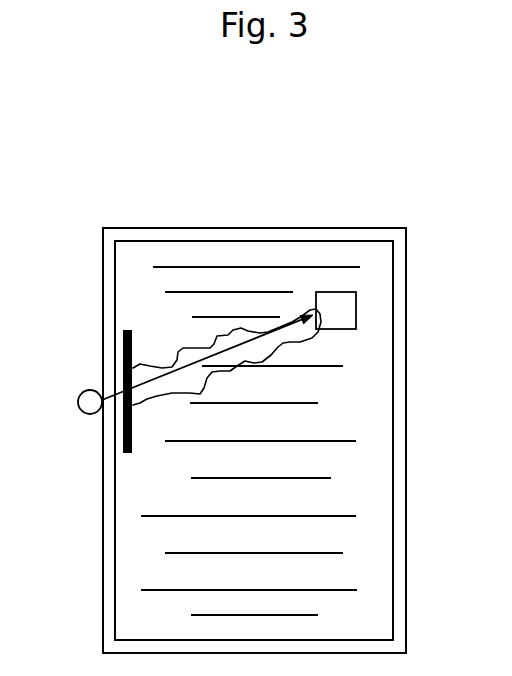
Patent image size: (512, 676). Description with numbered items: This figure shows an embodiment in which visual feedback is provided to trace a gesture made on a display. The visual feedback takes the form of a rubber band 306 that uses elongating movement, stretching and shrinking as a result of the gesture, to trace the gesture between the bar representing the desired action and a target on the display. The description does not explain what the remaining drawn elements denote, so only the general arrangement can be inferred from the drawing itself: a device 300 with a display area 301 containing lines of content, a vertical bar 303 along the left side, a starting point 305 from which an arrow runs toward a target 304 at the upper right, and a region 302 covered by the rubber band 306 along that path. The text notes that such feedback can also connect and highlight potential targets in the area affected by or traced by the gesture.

The display device 300 is at (407, 379).
The display screen 301 is at (367, 454).
The selected content region 302 is at (266, 342).
The side bar 303 is at (128, 341).
The operation button 304 is at (356, 305).
The touch start point 305 is at (78, 402).
The rubber band 306 is at (191, 353).